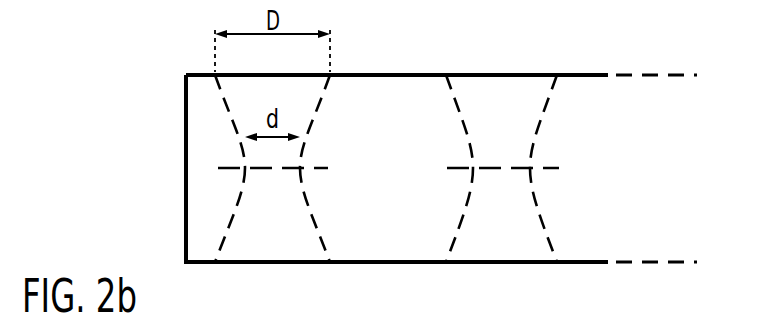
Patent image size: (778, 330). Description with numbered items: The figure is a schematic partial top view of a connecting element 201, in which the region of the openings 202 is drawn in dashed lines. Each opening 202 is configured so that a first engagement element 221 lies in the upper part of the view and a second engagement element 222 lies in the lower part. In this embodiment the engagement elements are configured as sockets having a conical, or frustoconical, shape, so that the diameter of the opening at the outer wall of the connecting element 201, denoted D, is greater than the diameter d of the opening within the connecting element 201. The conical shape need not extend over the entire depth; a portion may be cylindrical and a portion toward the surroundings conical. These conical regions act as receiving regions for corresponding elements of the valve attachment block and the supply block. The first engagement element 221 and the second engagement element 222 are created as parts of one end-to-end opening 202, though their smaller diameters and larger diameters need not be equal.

The connecting element 201 is at (186, 131).
The opening 202 is at (304, 163).
The first engagement element 221 is at (316, 101).
The second engagement element 222 is at (306, 205).